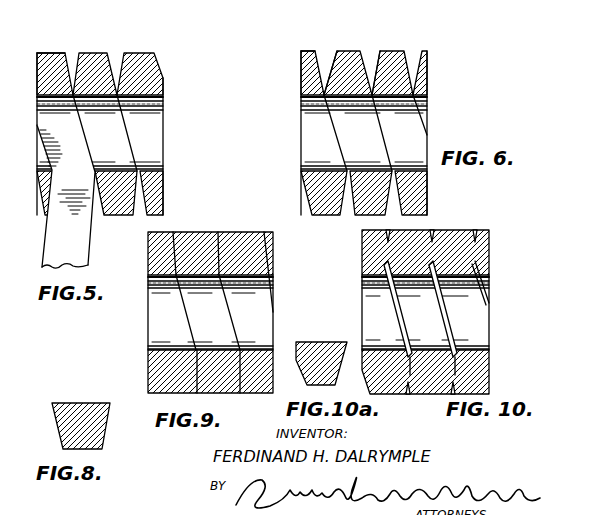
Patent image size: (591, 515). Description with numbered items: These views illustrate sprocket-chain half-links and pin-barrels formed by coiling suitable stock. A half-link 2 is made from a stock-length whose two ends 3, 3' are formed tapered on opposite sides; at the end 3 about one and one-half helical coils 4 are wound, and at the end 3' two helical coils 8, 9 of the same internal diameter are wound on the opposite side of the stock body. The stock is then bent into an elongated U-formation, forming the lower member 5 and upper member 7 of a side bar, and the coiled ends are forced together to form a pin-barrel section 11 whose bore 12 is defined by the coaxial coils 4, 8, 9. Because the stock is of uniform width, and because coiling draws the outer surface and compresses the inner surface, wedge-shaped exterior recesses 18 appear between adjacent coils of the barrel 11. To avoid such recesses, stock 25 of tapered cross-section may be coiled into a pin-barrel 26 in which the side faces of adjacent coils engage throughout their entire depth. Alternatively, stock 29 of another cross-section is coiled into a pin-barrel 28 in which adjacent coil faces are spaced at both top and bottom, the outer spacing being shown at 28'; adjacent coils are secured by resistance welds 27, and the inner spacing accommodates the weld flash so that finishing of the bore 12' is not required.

In FIG. 5, the half-link 2 is at (73, 181).
In FIG. 6, the half-link 2 is at (346, 137).
In FIG. 5, the end of stock-length 3 is at (20, 134).
In FIG. 6, the end of stock-length 3 is at (276, 133).
In FIG. 5, the opposite end of stock-length 3' is at (179, 142).
In FIG. 6, the opposite end of stock-length 3' is at (445, 133).
In FIG. 5, the coils 4 is at (52, 53).
In FIG. 6, the coils 4 is at (310, 51).
In FIG. 5, the lower member of side bar 5 is at (62, 230).
In FIG. 6, the lower member of side bar 5 is at (322, 203).
In FIG. 6, the upper member of side bar 7 is at (337, 53).
In FIG. 5, the coil 8 is at (104, 52).
In FIG. 6, the coil 8 is at (352, 51).
In FIG. 5, the coil 9 is at (143, 52).
In FIG. 6, the coil 9 is at (395, 51).
In FIG. 5, the pin-barrel section 11 is at (35, 62).
In FIG. 6, the pin-barrel section 11 is at (294, 63).
In FIG. 5, the bore 12 is at (119, 133).
In FIG. 6, the bore 12 is at (385, 133).
In FIG. 10, the bore 12' is at (444, 312).
In FIG. 5, the wedge-shaped exterior recesses 18 is at (72, 57).
In FIG. 6, the wedge-shaped exterior recesses 18 is at (374, 57).
In FIG. 8, the stock 25 is at (80, 403).
In FIG. 9, the pin-barrel 26 is at (210, 299).
In FIG. 10, the resistance welds 27 is at (432, 255).
In FIG. 10, the pin-barrel 28 is at (408, 290).
In FIG. 10, the spacing between coil faces 28' is at (431, 313).
In FIG. 10a, the stock 29 is at (318, 345).